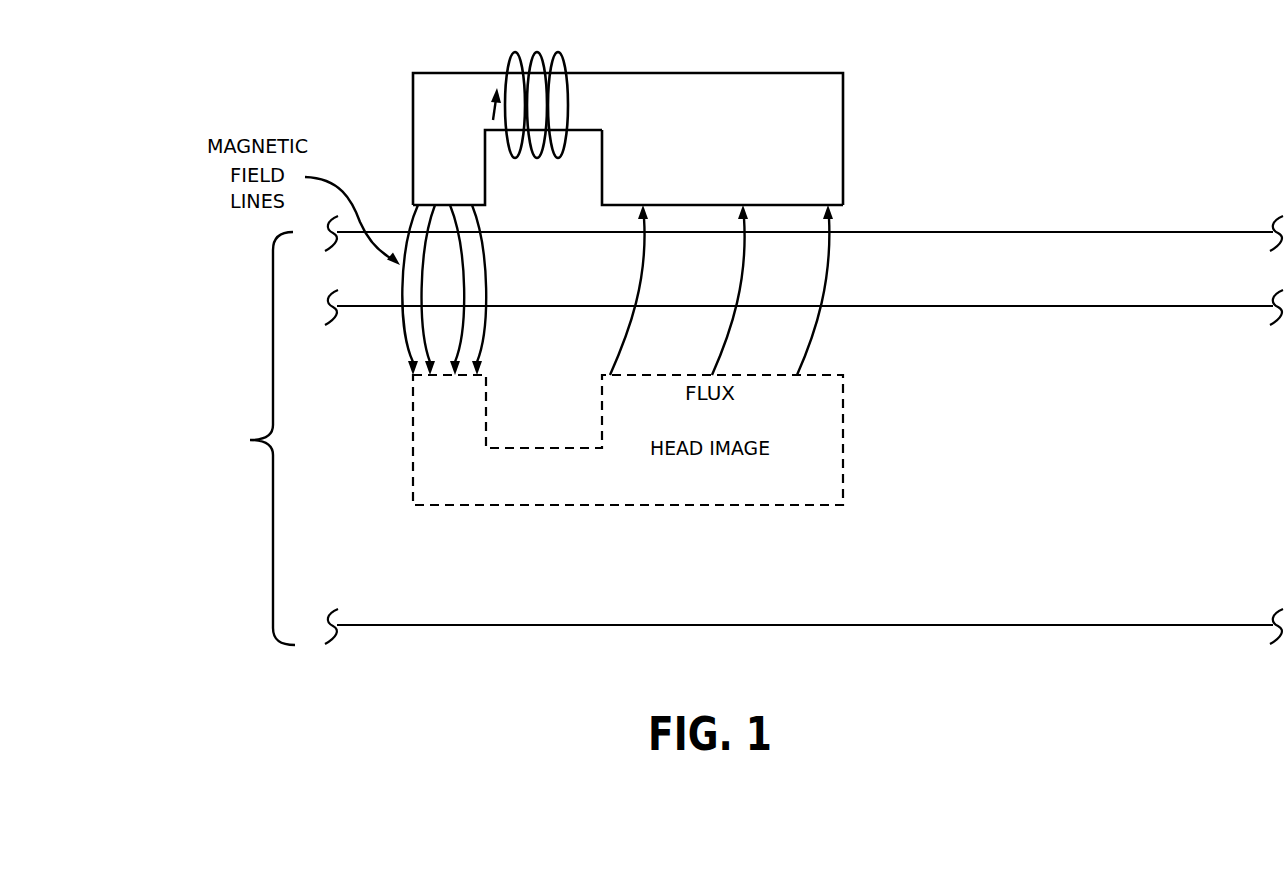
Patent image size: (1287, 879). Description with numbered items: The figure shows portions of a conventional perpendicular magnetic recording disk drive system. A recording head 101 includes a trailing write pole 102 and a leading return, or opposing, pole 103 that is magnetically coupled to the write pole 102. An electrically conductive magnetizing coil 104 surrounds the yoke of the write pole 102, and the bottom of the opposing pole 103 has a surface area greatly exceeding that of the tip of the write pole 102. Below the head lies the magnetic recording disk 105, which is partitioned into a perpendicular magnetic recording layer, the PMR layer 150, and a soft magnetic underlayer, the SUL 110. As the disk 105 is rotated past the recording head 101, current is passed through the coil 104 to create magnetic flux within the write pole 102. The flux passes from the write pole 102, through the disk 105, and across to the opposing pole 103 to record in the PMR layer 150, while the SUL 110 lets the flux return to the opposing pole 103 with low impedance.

The recording head 101 is at (762, 123).
The write pole 102 is at (530, 200).
The opposing pole 103 is at (792, 198).
The magnetizing coil 104 is at (610, 48).
The magnetic recording disk 105 is at (249, 438).
The soft magnetic underlayer 110 is at (1128, 601).
The PMR layer 150 is at (1285, 287).